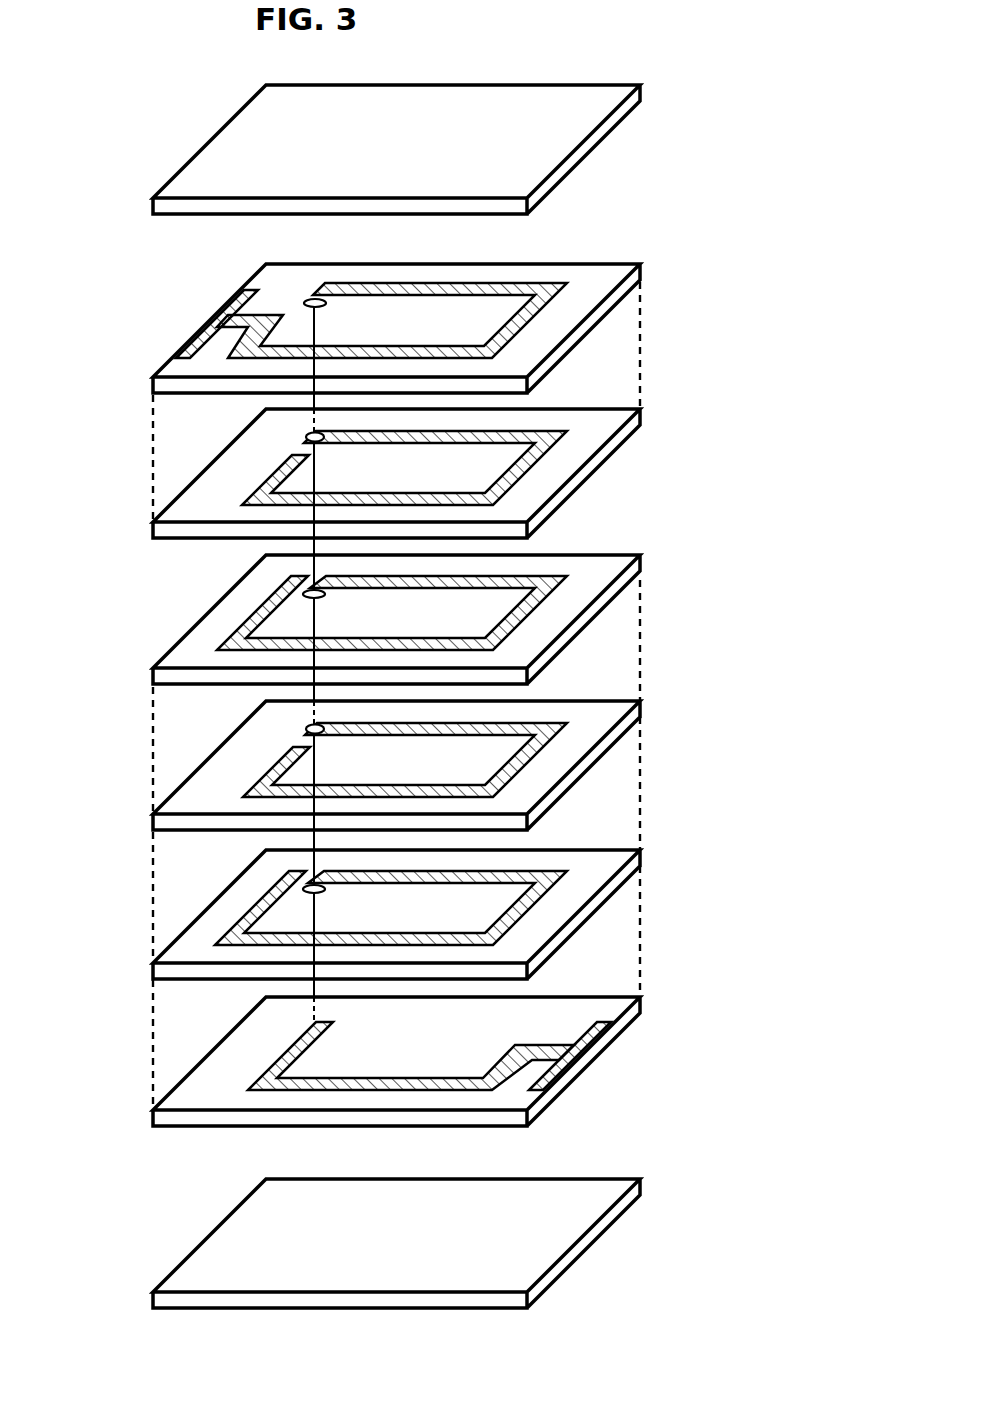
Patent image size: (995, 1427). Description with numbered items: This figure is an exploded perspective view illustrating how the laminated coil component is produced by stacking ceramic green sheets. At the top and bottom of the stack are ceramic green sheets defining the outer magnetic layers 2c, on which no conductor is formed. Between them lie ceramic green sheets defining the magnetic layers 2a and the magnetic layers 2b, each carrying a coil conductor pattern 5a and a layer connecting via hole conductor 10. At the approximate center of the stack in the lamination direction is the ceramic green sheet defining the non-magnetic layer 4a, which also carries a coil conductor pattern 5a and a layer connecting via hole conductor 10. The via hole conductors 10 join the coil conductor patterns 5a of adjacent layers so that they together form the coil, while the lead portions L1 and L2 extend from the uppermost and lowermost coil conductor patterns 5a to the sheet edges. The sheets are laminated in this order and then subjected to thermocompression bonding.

The magnetic layer 2a is at (600, 282).
The magnetic layer 2b is at (596, 722).
The outer magnetic layer 2c is at (577, 120).
The non-magnetic layer 4a is at (585, 593).
The coil conductor pattern 5a is at (490, 345).
The layer connecting via hole (conductor) 10 is at (305, 300).
The lead-out portion of coil (first end) L1 is at (213, 320).
The lead-out portion of coil (second end) L2 is at (560, 1082).